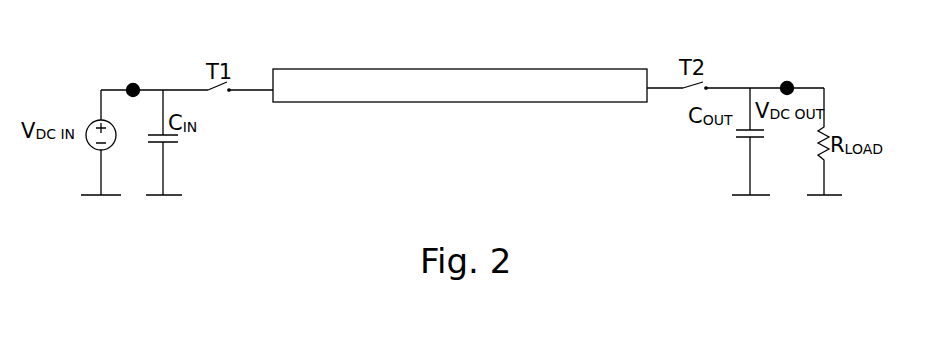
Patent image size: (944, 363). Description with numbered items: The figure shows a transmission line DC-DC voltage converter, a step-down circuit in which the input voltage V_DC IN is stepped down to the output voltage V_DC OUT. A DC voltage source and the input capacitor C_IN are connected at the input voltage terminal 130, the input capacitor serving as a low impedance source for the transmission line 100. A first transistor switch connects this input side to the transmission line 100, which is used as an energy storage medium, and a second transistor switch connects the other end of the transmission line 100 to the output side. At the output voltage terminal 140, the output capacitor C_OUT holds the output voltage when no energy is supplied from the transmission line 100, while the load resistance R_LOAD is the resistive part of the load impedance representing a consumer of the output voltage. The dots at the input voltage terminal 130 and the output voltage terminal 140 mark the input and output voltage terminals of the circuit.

The transmission line 100 is at (460, 85).
The input voltage terminal 130 is at (137, 76).
The output voltage terminal 140 is at (789, 78).